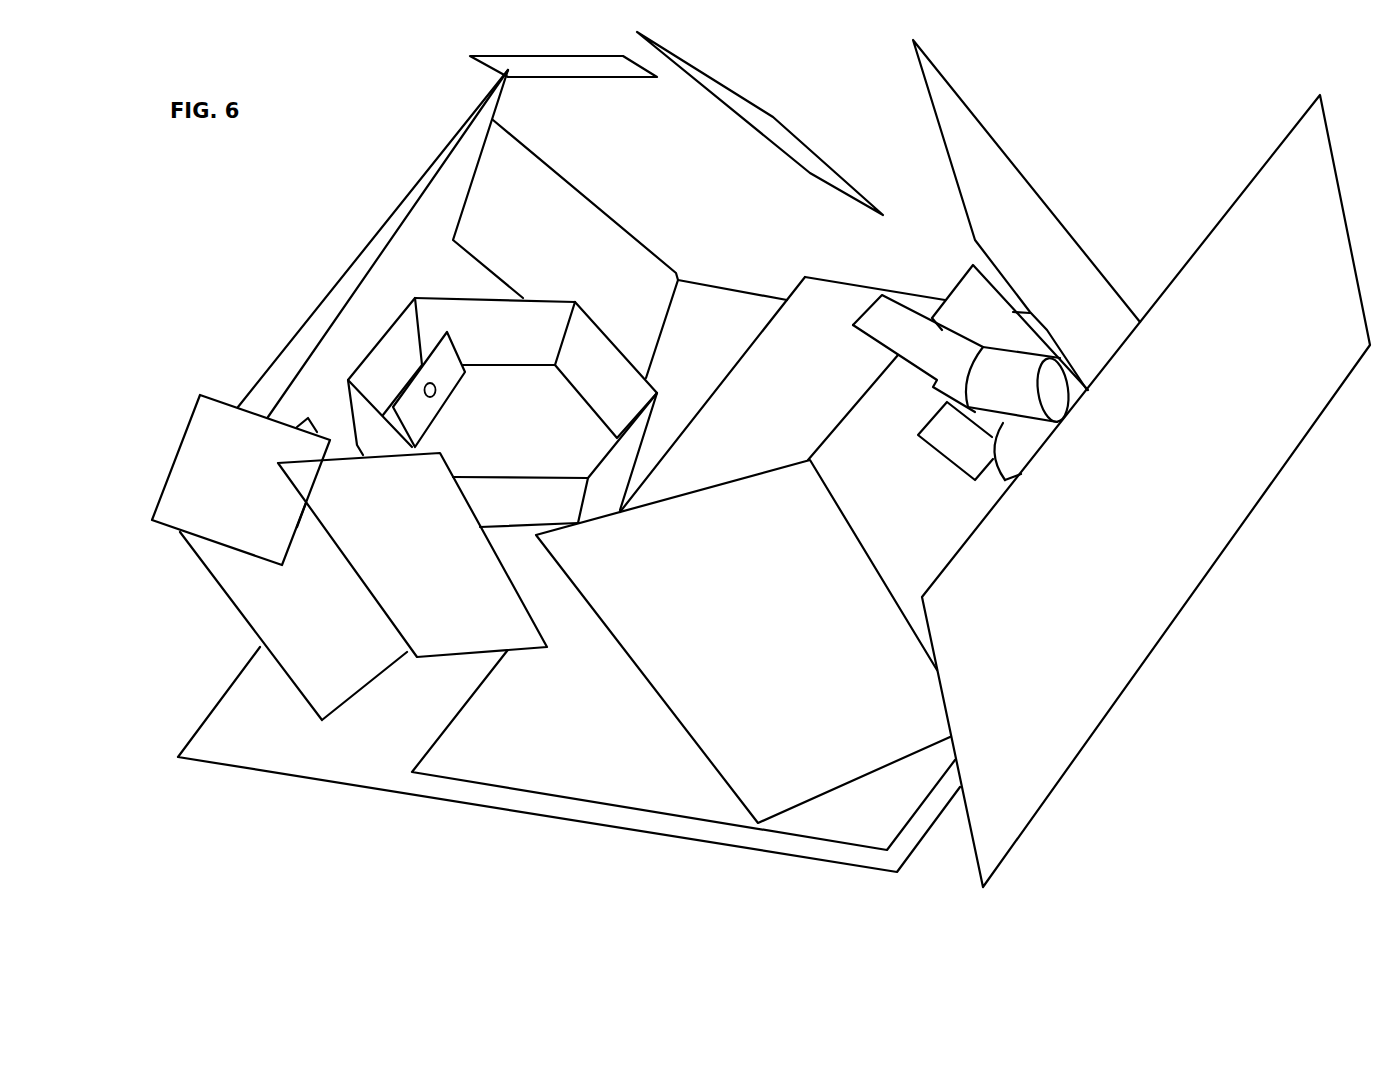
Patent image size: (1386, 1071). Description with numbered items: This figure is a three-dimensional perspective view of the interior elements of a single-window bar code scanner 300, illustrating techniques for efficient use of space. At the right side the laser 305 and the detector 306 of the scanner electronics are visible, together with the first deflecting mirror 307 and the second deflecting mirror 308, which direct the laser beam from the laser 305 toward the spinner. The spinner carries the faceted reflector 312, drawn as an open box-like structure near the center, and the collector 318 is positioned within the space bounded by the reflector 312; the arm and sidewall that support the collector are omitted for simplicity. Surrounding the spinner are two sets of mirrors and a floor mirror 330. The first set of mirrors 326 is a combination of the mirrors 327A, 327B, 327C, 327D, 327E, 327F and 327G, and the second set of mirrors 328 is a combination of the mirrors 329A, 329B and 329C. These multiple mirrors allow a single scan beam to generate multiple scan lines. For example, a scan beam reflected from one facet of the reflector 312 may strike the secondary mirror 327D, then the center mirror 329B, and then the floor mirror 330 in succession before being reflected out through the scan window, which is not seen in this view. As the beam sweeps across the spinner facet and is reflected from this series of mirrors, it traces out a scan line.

The bar code scanner 300 is at (1262, 750).
The laser 305 is at (1057, 393).
The detector 306 is at (1020, 450).
The first deflecting mirror 307 is at (937, 450).
The second deflecting mirror 308 is at (855, 338).
The reflector 312 is at (465, 295).
The collector 318 is at (442, 407).
The set of mirrors 326 is at (284, 314).
The mirror 327A is at (555, 78).
The mirror 327B is at (771, 115).
The mirror 327C is at (615, 220).
The secondary mirror 327D is at (398, 208).
The mirror 327E is at (176, 452).
The mirror 327F is at (233, 607).
The mirror 327G is at (372, 600).
The set of mirrors 328 is at (1076, 178).
The mirror 329A is at (970, 110).
The center mirror 329B is at (958, 283).
The mirror 329C is at (667, 710).
The floor mirror 330 is at (747, 350).